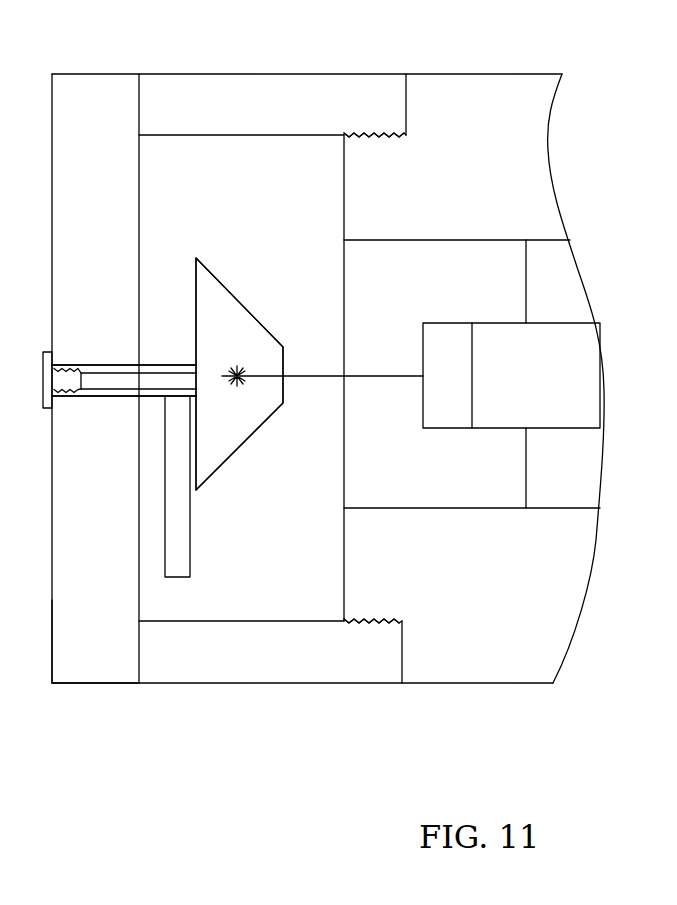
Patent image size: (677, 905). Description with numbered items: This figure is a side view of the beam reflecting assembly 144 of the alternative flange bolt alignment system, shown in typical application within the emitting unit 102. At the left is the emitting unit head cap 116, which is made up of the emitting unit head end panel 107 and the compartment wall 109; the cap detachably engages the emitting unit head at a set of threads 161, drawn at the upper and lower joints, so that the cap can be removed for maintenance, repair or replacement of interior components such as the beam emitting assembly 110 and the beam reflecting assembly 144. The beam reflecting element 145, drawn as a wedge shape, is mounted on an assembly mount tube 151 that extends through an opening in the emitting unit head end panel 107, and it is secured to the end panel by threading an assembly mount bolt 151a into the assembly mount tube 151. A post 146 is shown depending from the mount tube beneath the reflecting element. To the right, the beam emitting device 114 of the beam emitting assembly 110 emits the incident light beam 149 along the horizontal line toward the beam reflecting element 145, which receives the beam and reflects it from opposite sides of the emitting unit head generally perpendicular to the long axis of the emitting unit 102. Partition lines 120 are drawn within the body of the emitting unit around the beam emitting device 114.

The emitting unit 102 is at (518, 58).
The emitting unit head end panel 107 is at (52, 91).
The compartment wall 109 is at (255, 83).
The beam emitting assembly 110 is at (442, 241).
The beam emitting device 114 is at (575, 378).
The emitting unit head cap 116 is at (54, 648).
The partition 120 is at (500, 240).
The beam reflecting assembly 144 is at (214, 231).
The beam reflecting element 145 is at (244, 300).
The post 146 is at (176, 539).
The incident light beam 149 is at (351, 373).
The assembly mount tube 151 is at (110, 365).
The assembly mount bolt 151a is at (50, 410).
The threads 161 is at (372, 138).